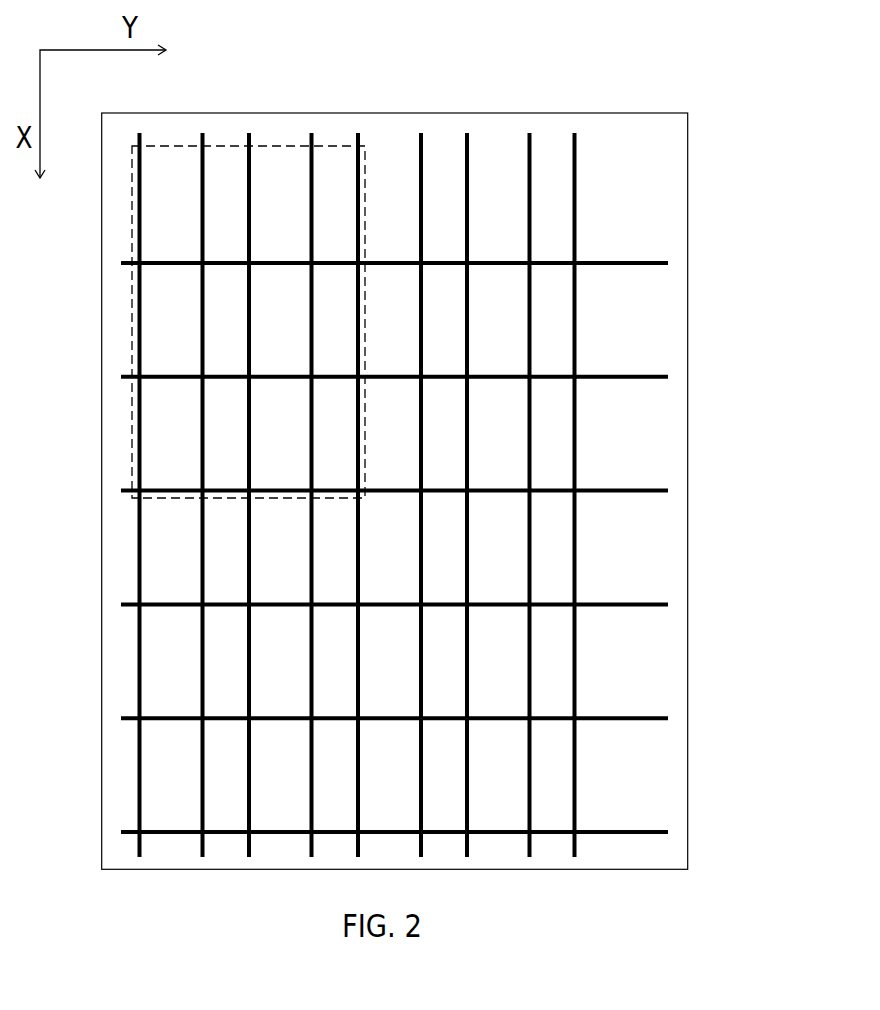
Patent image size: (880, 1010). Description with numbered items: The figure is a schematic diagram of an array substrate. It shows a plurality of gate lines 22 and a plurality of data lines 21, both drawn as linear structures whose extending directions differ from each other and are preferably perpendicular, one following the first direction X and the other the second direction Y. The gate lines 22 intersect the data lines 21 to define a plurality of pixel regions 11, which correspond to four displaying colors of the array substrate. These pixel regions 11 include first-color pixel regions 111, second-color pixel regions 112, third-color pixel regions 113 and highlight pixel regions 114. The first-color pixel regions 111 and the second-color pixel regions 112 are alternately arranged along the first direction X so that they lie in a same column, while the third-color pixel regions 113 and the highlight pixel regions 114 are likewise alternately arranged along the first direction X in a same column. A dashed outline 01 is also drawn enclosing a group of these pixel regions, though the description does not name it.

The pixel region / basic unit 01 is at (131, 243).
The pixel region 11 is at (389, 491).
The first-color pixel region 111 is at (382, 177).
The second-color pixel region 112 is at (499, 177).
The third-color pixel region 113 is at (441, 177).
The highlight pixel region 114 is at (557, 177).
The data line 21 is at (575, 217).
The gate line 22 is at (632, 375).